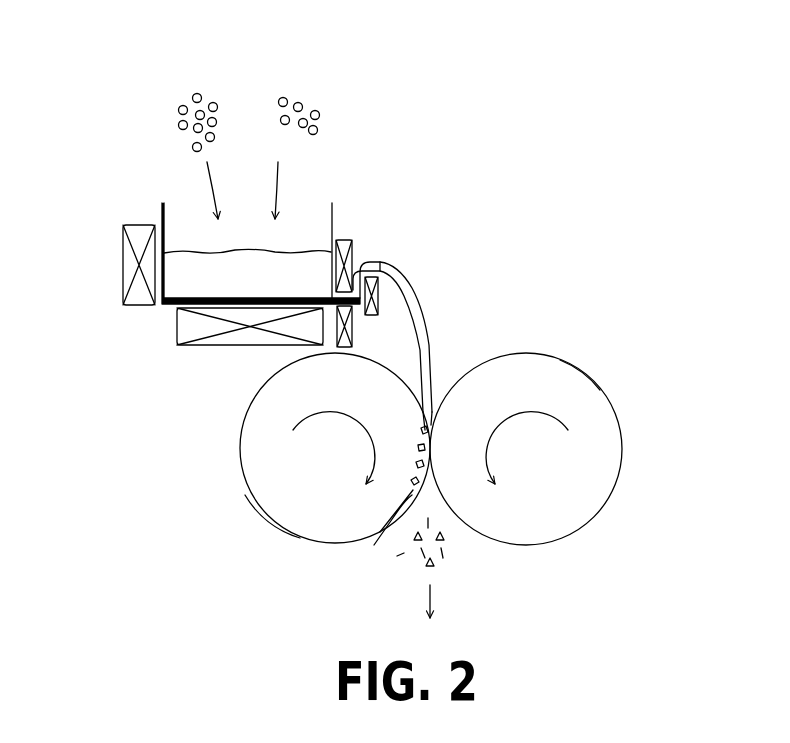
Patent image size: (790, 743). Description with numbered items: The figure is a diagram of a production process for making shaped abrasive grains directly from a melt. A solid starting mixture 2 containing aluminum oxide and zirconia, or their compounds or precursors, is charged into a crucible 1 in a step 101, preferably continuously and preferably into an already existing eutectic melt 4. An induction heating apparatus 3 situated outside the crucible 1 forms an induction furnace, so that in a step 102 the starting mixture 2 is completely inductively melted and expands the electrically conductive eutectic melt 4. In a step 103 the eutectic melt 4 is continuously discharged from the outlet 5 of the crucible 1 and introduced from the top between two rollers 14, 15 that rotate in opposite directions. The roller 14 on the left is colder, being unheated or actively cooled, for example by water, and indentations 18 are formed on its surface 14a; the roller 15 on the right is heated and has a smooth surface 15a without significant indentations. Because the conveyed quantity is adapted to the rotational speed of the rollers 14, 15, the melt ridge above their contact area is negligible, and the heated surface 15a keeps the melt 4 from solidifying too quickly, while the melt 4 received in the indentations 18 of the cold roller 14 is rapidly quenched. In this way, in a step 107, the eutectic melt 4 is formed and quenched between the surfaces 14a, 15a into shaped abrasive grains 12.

The crucible 1 is at (160, 306).
The starting mixture 2 is at (213, 90).
The induction heating apparatus 3 is at (125, 300).
The eutectic melt 4 is at (287, 272).
The outlet 5 is at (370, 259).
The shaped abrasive grains 12 is at (453, 566).
The roller 14 is at (252, 495).
The surface 14a is at (282, 530).
The roller 15 is at (595, 517).
The surface 15a is at (585, 372).
The indentations 18 is at (380, 532).
The step of introducing starting materials 101 is at (384, 121).
The step of melting 102 is at (414, 232).
The step of discharging the melt 103 is at (466, 290).
The step of forming and quenching 107 is at (229, 407).